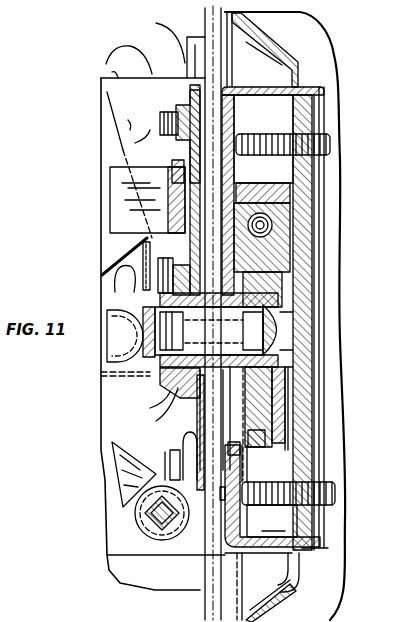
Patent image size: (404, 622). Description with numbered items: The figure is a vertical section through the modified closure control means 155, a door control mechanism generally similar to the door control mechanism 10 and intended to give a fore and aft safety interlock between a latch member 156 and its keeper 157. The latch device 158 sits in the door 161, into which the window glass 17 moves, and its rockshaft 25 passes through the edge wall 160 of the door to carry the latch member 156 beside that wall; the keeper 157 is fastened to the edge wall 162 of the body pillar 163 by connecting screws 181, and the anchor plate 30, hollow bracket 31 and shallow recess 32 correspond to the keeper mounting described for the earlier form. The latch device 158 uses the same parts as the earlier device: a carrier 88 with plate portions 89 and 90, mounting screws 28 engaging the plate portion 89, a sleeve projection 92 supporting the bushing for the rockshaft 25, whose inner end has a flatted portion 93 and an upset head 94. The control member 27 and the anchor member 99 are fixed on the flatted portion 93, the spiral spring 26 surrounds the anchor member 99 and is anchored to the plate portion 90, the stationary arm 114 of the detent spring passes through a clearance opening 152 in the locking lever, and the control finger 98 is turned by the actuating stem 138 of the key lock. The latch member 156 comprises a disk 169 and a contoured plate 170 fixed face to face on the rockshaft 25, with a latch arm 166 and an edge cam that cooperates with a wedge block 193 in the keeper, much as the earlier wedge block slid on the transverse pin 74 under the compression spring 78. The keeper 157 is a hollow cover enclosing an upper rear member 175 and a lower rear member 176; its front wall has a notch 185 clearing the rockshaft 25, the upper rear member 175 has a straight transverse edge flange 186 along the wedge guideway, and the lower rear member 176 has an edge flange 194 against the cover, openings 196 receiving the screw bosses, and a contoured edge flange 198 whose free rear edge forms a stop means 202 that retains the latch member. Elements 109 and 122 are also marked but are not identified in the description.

The door control mechanism 10 is at (220, 15).
The window glass 17 is at (178, 242).
The rockshaft 25 is at (262, 333).
The spiral spring 26 is at (150, 408).
The control member 27 is at (156, 421).
The mounting screws 28 is at (135, 143).
The anchor plate 30 is at (309, 192).
The hollow bracket 31 is at (338, 316).
The shallow recess 32 is at (283, 592).
The transverse pin 74 is at (300, 252).
The compression spring 78 is at (286, 238).
The carrier 88 is at (106, 76).
The plate portion 89 is at (170, 170).
The plate portion 90 is at (128, 126).
The sleeve projection 92 is at (238, 268).
The flatted portion 93 is at (184, 334).
The upset head 94 is at (115, 309).
The control finger 98 is at (118, 500).
The anchor member 99 is at (150, 370).
The rectangular member 109 is at (110, 200).
The stationary arm 114 is at (136, 247).
The guide 122 is at (110, 351).
The actuating stem 138 is at (150, 525).
The clearance opening 152 is at (124, 268).
The modified closure control means 155 is at (140, 98).
The latch member 156 is at (290, 376).
The keeper 157 is at (276, 76).
The latch device 158 is at (120, 49).
The edge wall 160 is at (157, 23).
The door 161 is at (112, 62).
The edge wall 162 is at (252, 39).
The door frame 163 is at (326, 72).
The latch arm 166 is at (265, 420).
The disk 169 is at (270, 410).
The contoured plate 170 is at (282, 284).
The upper rear member 175 is at (242, 93).
The lower rear member 176 is at (246, 558).
The connecting screws 181 is at (332, 146).
The notch 185 is at (242, 106).
The straight transverse edge flange 186 is at (246, 190).
The wedge block 193 is at (271, 228).
The edge flange 194 is at (303, 583).
The openings 196 is at (247, 520).
The edge flange 198 is at (253, 433).
The stop means 202 is at (273, 453).